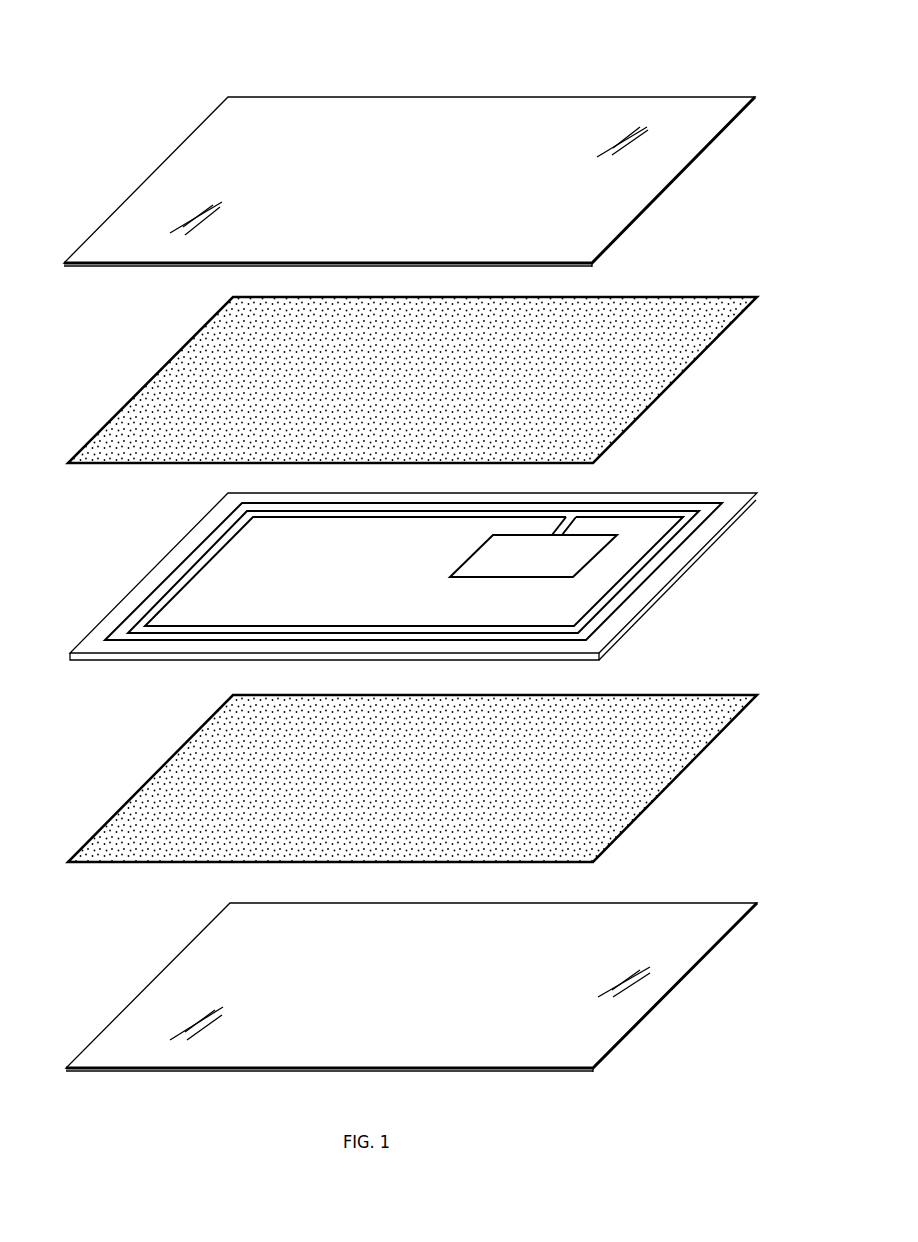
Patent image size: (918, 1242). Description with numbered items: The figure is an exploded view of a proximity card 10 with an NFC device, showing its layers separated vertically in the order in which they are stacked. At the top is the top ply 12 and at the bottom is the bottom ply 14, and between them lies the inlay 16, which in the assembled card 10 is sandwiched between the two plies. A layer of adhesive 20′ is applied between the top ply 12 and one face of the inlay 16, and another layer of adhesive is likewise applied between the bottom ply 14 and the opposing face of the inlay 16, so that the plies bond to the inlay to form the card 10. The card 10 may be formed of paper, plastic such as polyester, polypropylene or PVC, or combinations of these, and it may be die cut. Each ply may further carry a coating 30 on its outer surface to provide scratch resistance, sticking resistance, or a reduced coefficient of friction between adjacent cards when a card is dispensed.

The card 10 is at (206, 82).
The top ply 12 is at (680, 128).
The bottom ply 14 is at (680, 925).
The inlay 16 is at (635, 532).
The layer of adhesive 20′ is at (148, 410).
The coating 30 is at (635, 145).